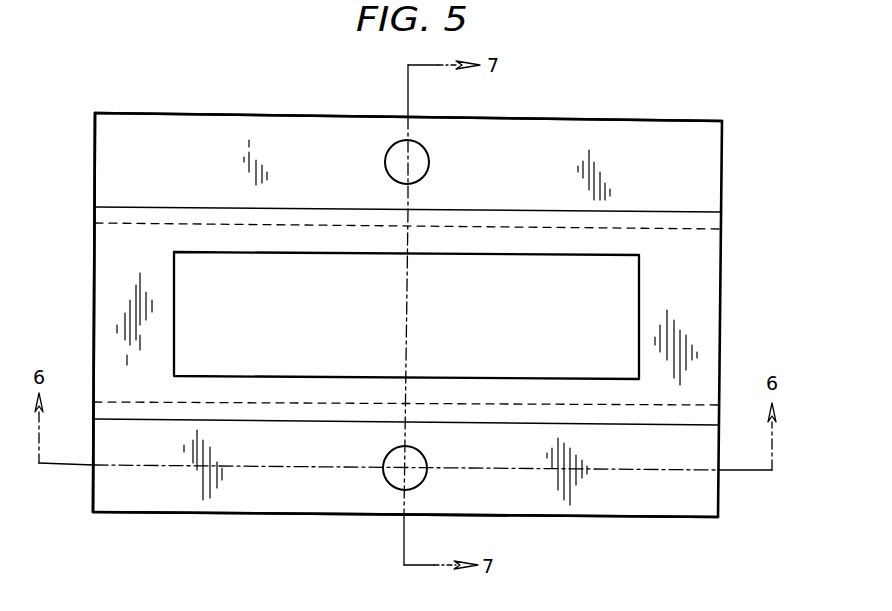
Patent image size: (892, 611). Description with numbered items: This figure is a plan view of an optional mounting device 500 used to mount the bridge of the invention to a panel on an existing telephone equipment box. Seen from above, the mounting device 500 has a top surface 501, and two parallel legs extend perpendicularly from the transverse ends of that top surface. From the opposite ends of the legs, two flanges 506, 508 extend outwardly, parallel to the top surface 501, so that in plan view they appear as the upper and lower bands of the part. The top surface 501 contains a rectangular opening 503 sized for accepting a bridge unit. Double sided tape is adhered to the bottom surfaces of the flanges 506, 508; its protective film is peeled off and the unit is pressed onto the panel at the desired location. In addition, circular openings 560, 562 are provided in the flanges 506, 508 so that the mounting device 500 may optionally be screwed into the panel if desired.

The mounting device 500 is at (707, 309).
The top surface 501 is at (102, 292).
The opening 503 is at (622, 288).
The flange 506 is at (665, 131).
The flange 508 is at (662, 505).
The circular opening 560 is at (416, 475).
The circular opening 562 is at (420, 164).